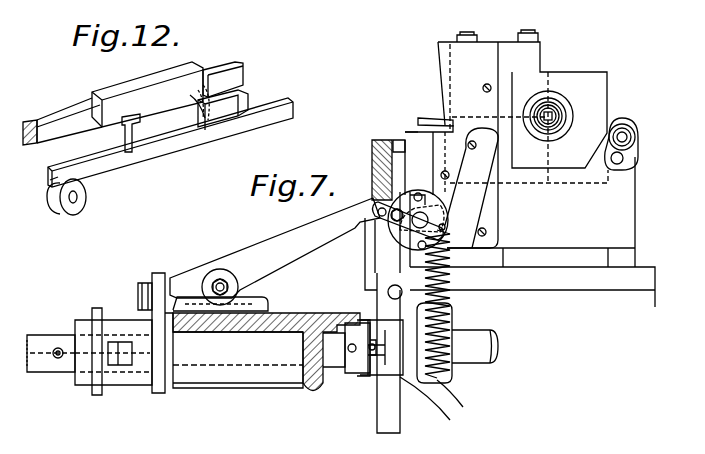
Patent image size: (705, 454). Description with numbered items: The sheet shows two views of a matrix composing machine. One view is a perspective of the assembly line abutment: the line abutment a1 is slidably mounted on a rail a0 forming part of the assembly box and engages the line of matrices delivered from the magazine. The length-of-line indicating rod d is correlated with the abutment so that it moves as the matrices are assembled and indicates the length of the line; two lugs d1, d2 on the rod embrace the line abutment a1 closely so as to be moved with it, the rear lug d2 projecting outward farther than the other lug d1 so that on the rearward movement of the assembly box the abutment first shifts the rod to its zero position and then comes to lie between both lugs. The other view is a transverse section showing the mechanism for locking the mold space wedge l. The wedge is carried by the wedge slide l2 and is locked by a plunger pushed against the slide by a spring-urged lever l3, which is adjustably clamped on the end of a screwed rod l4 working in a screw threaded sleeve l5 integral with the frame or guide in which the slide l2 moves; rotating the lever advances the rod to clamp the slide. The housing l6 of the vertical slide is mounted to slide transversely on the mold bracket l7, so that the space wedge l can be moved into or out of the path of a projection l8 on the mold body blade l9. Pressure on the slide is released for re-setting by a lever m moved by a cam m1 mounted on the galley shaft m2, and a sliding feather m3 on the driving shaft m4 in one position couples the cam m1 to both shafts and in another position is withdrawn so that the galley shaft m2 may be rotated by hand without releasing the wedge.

In FIG. 12, the length-of-line indicating rod d is at (270, 115).
In FIG. 12, the lug d1 is at (122, 127).
In FIG. 12, the rear lug d2 is at (237, 103).
In FIG. 12, the line abutment a1 is at (170, 102).
In FIG. 12, the rail a0 is at (238, 62).
In FIG. 7, the mold space wedge l is at (440, 97).
In FIG. 7, the wedge slide l2 is at (453, 265).
In FIG. 7, the spring-urged lever l3 is at (383, 227).
In FIG. 7, the screwed rod l4 is at (405, 228).
In FIG. 7, the screw threaded sleeve l5 is at (442, 193).
In FIG. 7, the housing l6 is at (415, 192).
In FIG. 7, the mold bracket l7 is at (450, 193).
In FIG. 7, the projection l8 is at (410, 129).
In FIG. 7, the mold body blade l9 is at (418, 120).
In FIG. 7, the lever m is at (265, 257).
In FIG. 7, the cam m1 is at (162, 375).
In FIG. 7, the galley shaft m2 is at (330, 350).
In FIG. 7, the sliding feather m3 is at (58, 360).
In FIG. 7, the driving shaft m4 is at (43, 346).